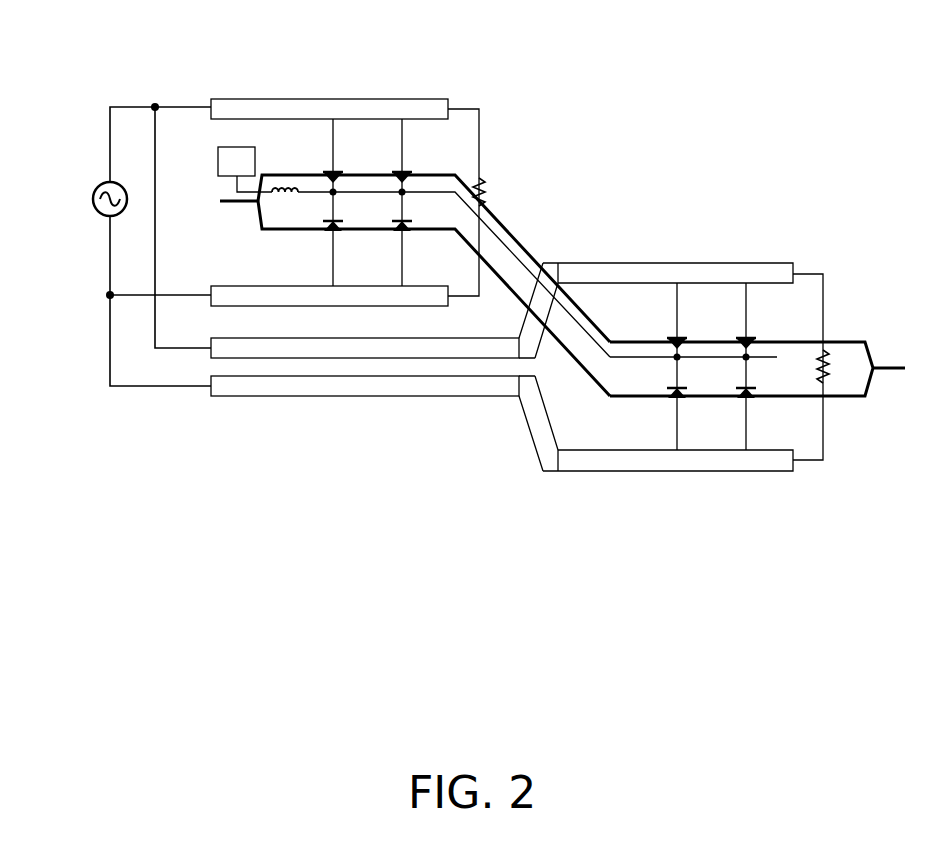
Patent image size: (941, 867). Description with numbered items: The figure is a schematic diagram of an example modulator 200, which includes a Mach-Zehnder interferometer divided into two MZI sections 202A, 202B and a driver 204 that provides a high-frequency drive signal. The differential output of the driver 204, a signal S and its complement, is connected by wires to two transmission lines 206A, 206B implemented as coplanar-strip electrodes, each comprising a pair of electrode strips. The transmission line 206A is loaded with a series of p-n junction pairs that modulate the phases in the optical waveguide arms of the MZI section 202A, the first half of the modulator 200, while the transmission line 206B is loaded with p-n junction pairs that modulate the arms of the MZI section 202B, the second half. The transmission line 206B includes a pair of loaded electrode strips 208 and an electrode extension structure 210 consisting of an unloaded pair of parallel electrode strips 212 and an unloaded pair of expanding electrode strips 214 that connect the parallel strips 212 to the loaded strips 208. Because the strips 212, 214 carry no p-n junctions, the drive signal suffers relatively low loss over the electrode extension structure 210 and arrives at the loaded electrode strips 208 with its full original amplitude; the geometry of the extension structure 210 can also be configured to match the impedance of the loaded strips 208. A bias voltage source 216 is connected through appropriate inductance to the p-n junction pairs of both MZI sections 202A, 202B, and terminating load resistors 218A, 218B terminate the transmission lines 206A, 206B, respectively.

The modulator 200 is at (646, 60).
The driver 204 is at (108, 183).
The bias voltage source 216 is at (218, 158).
The transmission line 206A is at (485, 81).
The MZI section 202A is at (460, 152).
The terminating load resistor 218A is at (518, 182).
The MZI section 202B is at (803, 318).
The terminating load resistor 218B is at (846, 388).
The unloaded pair of parallel electrode strips 212 is at (518, 486).
The unloaded pair of expanding electrode strips 214 is at (563, 486).
The electrode extension structure 210 is at (558, 556).
The pair of electrode strips 208 is at (805, 556).
The transmission line 206B is at (805, 643).